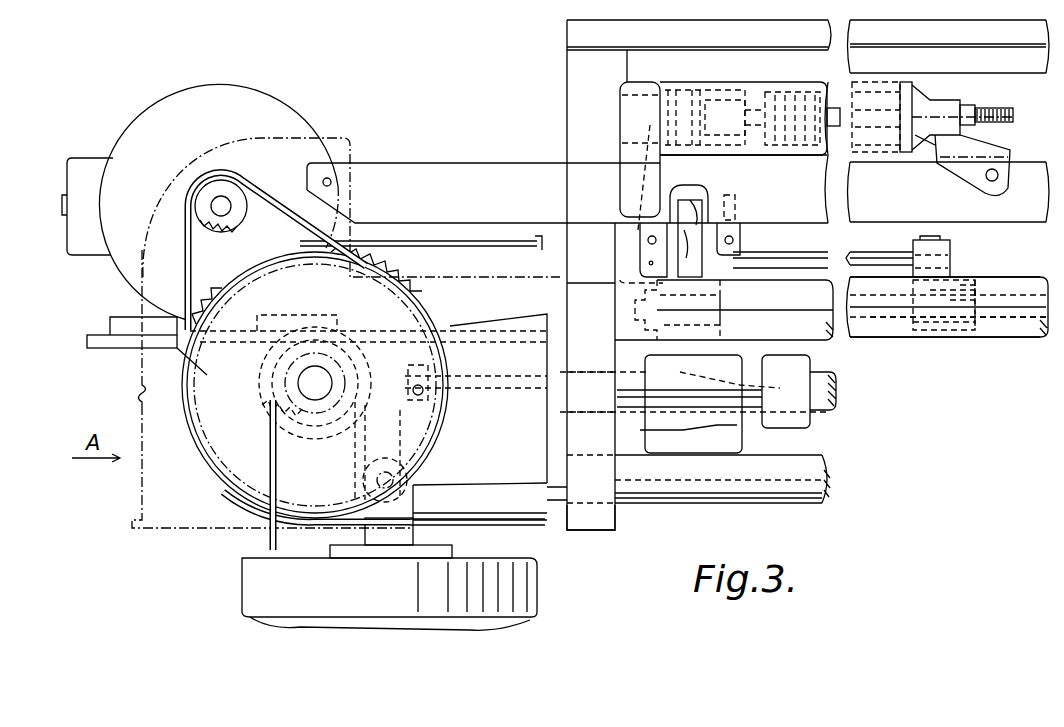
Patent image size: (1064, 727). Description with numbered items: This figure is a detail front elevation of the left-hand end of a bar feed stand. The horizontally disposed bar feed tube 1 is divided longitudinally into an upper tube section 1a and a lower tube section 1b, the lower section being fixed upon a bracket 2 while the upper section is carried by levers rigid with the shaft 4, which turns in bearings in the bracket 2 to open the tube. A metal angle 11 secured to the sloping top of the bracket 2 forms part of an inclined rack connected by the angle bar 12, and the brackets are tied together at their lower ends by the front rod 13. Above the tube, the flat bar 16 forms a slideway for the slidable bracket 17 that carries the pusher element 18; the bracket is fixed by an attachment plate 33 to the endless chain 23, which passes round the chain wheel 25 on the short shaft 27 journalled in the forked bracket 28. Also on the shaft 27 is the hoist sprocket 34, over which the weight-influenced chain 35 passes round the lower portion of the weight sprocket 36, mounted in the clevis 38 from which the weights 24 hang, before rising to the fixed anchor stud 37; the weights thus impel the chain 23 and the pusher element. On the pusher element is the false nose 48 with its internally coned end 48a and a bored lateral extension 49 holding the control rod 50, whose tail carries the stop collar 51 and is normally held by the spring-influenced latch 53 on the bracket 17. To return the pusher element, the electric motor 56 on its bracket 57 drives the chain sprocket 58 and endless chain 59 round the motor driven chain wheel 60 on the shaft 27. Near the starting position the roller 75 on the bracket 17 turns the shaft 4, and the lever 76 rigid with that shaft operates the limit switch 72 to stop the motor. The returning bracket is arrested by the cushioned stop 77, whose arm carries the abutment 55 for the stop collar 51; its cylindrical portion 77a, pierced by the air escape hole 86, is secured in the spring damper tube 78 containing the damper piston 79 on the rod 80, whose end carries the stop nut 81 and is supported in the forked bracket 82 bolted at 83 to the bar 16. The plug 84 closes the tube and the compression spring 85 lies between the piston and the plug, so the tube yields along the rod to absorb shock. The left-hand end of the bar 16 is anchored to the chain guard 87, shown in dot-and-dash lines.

The bar feed tube 1 is at (1048, 290).
The upper tube section 1a is at (1015, 282).
The lower tube section 1b is at (1007, 330).
The bracket 2 is at (597, 520).
The shaft 4 is at (823, 400).
The metal angle 11 is at (565, 133).
The angle bar 12 is at (808, 46).
The front rod 13 is at (780, 494).
The bar 16 is at (883, 210).
The slidable bracket 17 is at (707, 184).
The pusher element 18 is at (782, 282).
The endless chain 23 is at (507, 245).
The weights 24 is at (250, 584).
The chain wheel 25 is at (386, 272).
The short shaft 27 is at (322, 388).
The forked bracket 28 is at (528, 490).
The attachment plate 33 is at (741, 252).
The hoist sprocket 34 is at (265, 417).
The weight-influenced chain 35 is at (268, 458).
The weight sprocket 36 is at (380, 455).
The anchor stud 37 is at (446, 408).
The clevis 38 is at (413, 533).
The false nose 48 is at (940, 328).
The internally coned leading end 48a is at (979, 283).
The bored lateral extension 49 is at (950, 242).
The control rod 50 is at (890, 256).
The stop collar 51 is at (648, 267).
The spring-influenced latch 53 is at (722, 202).
The abutment 55 is at (632, 256).
The electric motor 56 is at (180, 100).
The bracket 57 is at (92, 340).
The chain sprocket 58 is at (213, 232).
The endless chain 59 is at (187, 250).
The motor driven chain wheel 60 is at (393, 313).
The limit switch 72 is at (727, 420).
The roller 75 is at (690, 252).
The lever 76 is at (800, 369).
The cushioned stop 77 is at (627, 178).
The cylindrical portion 77a is at (628, 86).
The spring damper tube 78 is at (788, 155).
The damper piston 79 is at (754, 92).
The rod 80 is at (830, 80).
The stop nut 81 is at (920, 138).
The bracket 82 is at (946, 105).
The bolt 83 is at (997, 178).
The plug 84 is at (912, 83).
The compression spring 85 is at (862, 95).
The air escape hole 86 is at (707, 90).
The chain guard 87 is at (352, 140).